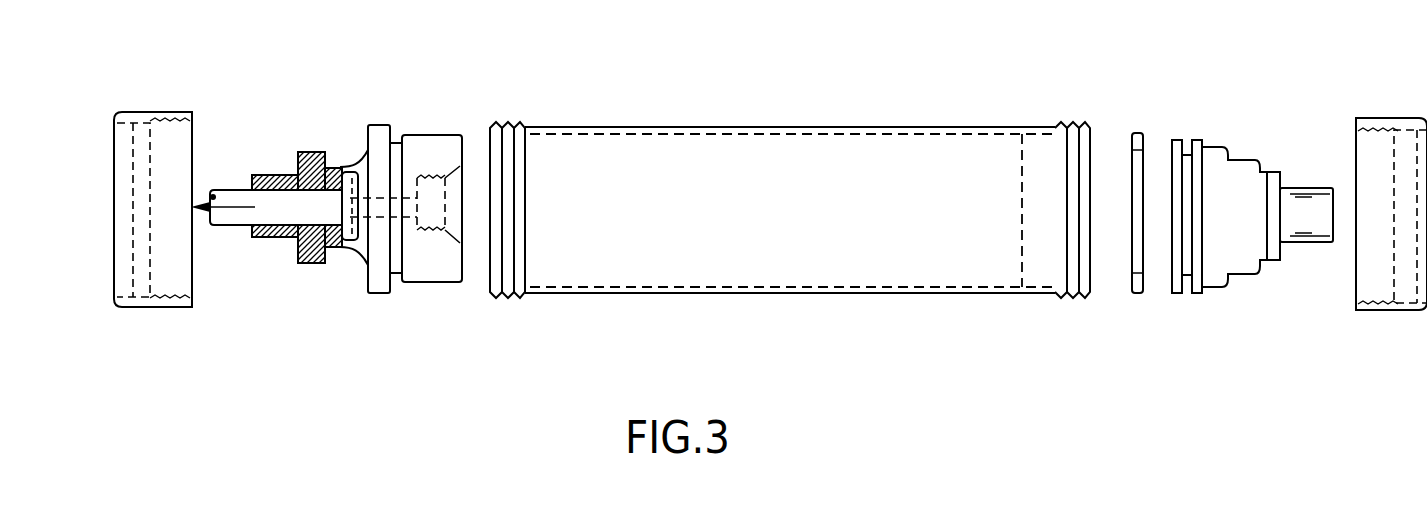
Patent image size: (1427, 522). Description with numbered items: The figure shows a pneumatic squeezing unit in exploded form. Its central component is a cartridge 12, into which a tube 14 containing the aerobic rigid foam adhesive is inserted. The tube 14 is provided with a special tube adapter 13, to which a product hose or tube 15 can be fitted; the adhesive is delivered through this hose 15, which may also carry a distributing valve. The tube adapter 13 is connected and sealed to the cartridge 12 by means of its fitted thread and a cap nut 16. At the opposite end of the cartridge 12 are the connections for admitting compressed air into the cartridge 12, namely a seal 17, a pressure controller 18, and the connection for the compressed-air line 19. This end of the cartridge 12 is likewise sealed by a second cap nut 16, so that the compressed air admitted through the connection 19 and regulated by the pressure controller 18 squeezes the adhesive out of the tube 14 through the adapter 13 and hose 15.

The cartridge 12 is at (847, 296).
The tube adapter 13 is at (410, 284).
The tube 14 is at (723, 288).
The product hose or tube 15 is at (241, 215).
The cap nut 16 is at (165, 119).
The seal 17 is at (1138, 296).
The pressure controller 18 is at (1248, 265).
The connection for compressed-air line 19 is at (1306, 200).